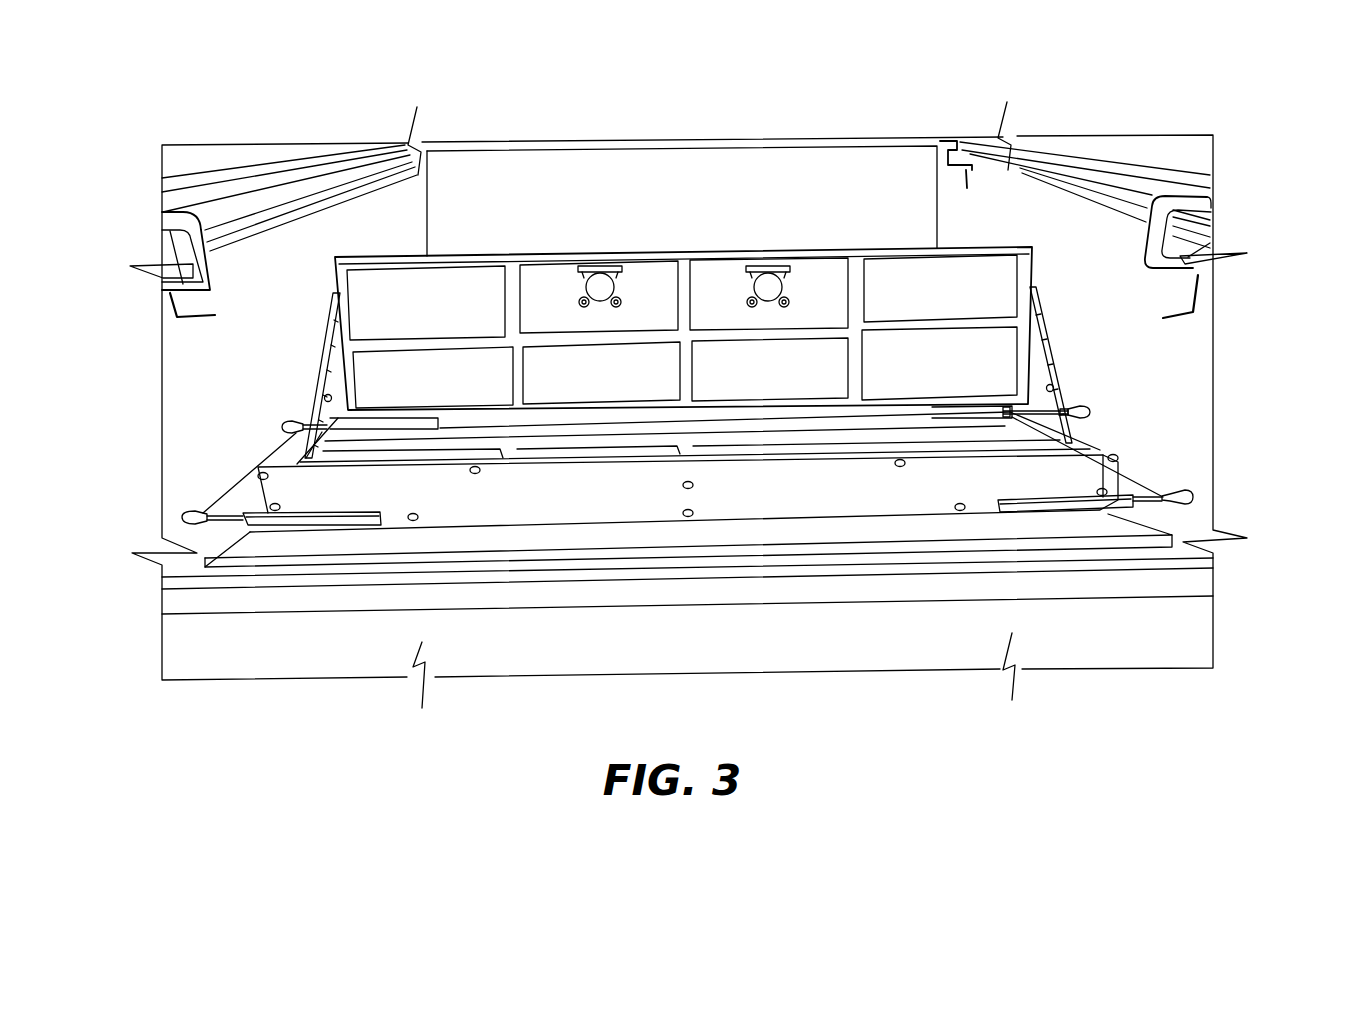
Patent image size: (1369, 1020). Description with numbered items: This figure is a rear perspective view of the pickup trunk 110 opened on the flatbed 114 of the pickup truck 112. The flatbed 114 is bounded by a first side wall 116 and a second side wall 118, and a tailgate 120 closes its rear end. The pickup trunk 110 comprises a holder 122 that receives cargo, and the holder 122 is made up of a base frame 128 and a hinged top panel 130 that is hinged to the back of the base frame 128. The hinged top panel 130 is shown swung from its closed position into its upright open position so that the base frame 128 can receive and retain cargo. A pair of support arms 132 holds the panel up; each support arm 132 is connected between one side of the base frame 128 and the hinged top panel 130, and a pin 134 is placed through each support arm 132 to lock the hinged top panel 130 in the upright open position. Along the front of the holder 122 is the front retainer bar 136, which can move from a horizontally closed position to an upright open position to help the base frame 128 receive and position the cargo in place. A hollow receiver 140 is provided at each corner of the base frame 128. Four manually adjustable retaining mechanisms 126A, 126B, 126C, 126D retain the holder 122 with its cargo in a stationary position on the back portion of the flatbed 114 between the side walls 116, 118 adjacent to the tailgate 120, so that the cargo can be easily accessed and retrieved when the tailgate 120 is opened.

The pickup trunk 110 is at (538, 250).
The pickup truck 112 is at (828, 140).
The flatbed of pickup truck 114 is at (850, 535).
The side wall of bed 116 is at (338, 227).
The side wall of bed 118 is at (1037, 207).
The tailgate of pickup truck 120 is at (927, 653).
The holder of pickup trunk 122 is at (322, 528).
The manually adjustable retaining mechanism 126A is at (205, 510).
The manually adjustable retaining mechanism 126B is at (1163, 494).
The manually adjustable retaining mechanism 126C is at (293, 435).
The manually adjustable retaining mechanism 126D is at (1073, 407).
The base frame of holder 128 is at (1090, 508).
The hinged top panel of holder 130 is at (722, 290).
The support arm of top panel 132 is at (327, 358).
The pin of support arm 134 is at (331, 398).
The front retainer bar of holder 136 is at (600, 497).
The hollow receiver at each corner of the base frame 140 is at (1092, 409).